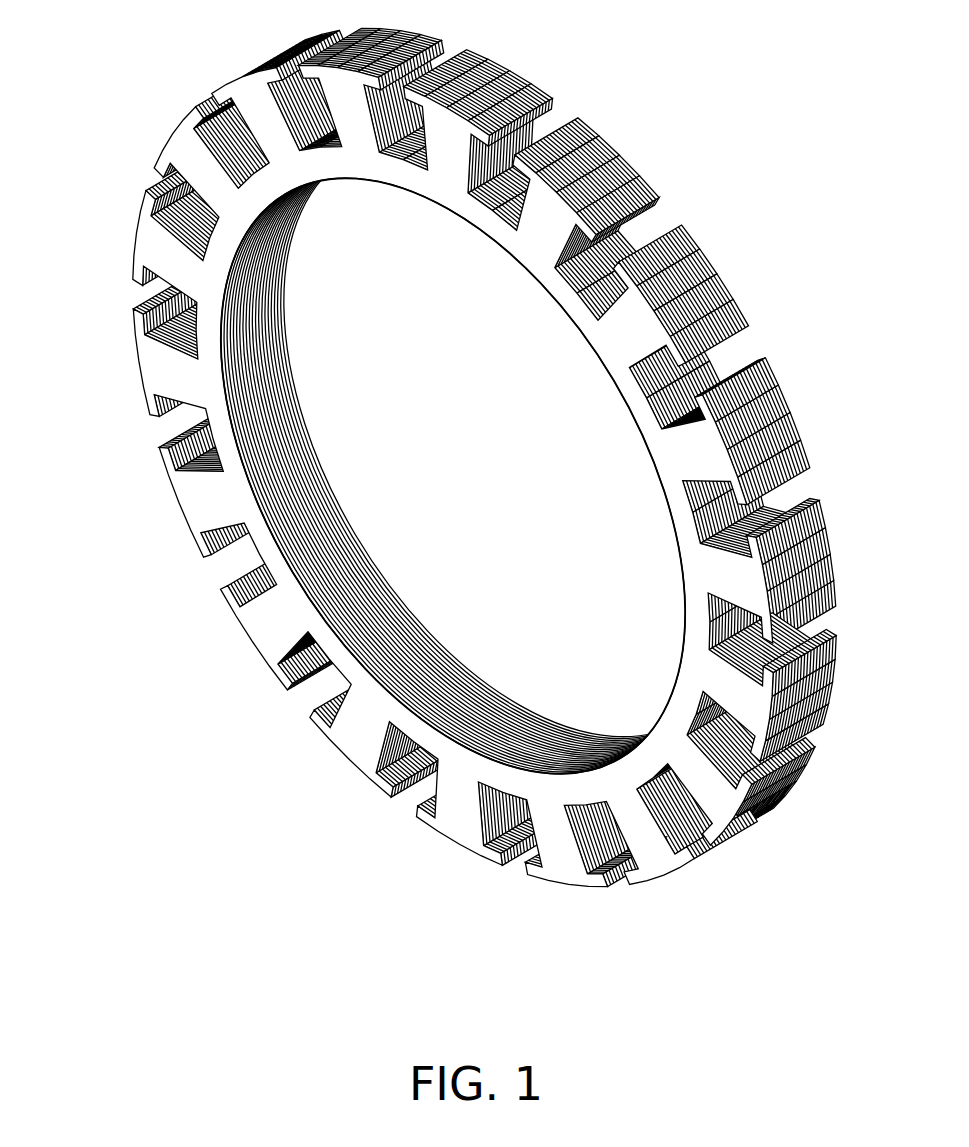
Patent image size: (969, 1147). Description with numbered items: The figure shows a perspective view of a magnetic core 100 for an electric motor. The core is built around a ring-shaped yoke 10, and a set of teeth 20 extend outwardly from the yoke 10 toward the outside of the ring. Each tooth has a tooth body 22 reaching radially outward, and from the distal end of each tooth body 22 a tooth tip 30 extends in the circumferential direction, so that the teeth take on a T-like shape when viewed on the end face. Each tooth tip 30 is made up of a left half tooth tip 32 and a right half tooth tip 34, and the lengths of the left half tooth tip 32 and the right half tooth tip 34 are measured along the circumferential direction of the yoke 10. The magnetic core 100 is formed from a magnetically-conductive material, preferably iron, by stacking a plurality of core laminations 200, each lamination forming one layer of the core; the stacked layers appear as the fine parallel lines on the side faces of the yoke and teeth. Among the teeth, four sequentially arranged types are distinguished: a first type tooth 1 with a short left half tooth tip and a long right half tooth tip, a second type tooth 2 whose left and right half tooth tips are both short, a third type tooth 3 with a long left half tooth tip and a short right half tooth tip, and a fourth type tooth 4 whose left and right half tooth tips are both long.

The magnetic core 100 is at (464, 457).
The ring-shaped yoke 10 is at (205, 255).
The teeth 20 is at (464, 457).
The tooth body 22 is at (212, 488).
The tooth tip 30 is at (236, 629).
The left half tooth tip 32 is at (267, 660).
The right half tooth tip 34 is at (227, 600).
The core laminations 200 is at (754, 490).
The first type tooth 1 is at (653, 332).
The second type tooth 2 is at (708, 443).
The third type tooth 3 is at (760, 585).
The fourth type tooth 4 is at (748, 707).